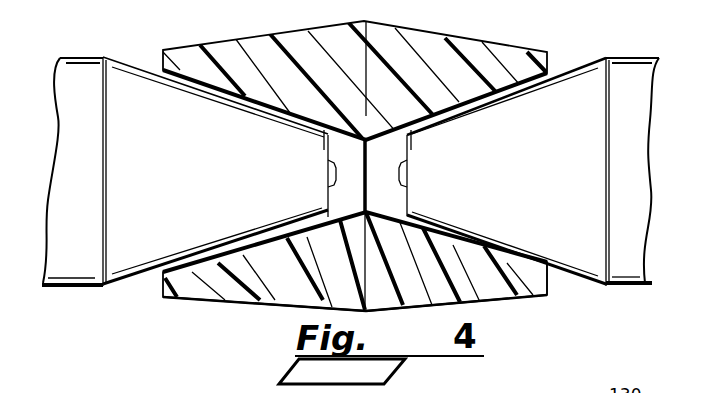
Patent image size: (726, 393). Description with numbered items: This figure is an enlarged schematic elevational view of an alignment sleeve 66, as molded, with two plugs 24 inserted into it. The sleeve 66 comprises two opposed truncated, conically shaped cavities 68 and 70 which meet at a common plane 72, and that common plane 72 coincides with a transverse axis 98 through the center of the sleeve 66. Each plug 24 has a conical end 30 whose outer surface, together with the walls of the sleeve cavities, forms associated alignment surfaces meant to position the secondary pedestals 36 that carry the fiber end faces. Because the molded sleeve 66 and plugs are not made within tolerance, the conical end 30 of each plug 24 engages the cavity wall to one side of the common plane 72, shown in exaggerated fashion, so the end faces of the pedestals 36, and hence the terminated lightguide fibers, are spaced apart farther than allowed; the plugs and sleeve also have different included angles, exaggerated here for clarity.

The plug 24 is at (66, 290).
The conical end 30 is at (574, 233).
The secondary pedestal 36 is at (327, 178).
The alignment sleeve 66 is at (487, 57).
The truncated conically shaped cavity 68 is at (522, 260).
The truncated conically shaped cavity 70 is at (193, 267).
The common plane 72 is at (356, 184).
The transverse axis 98 is at (362, 57).